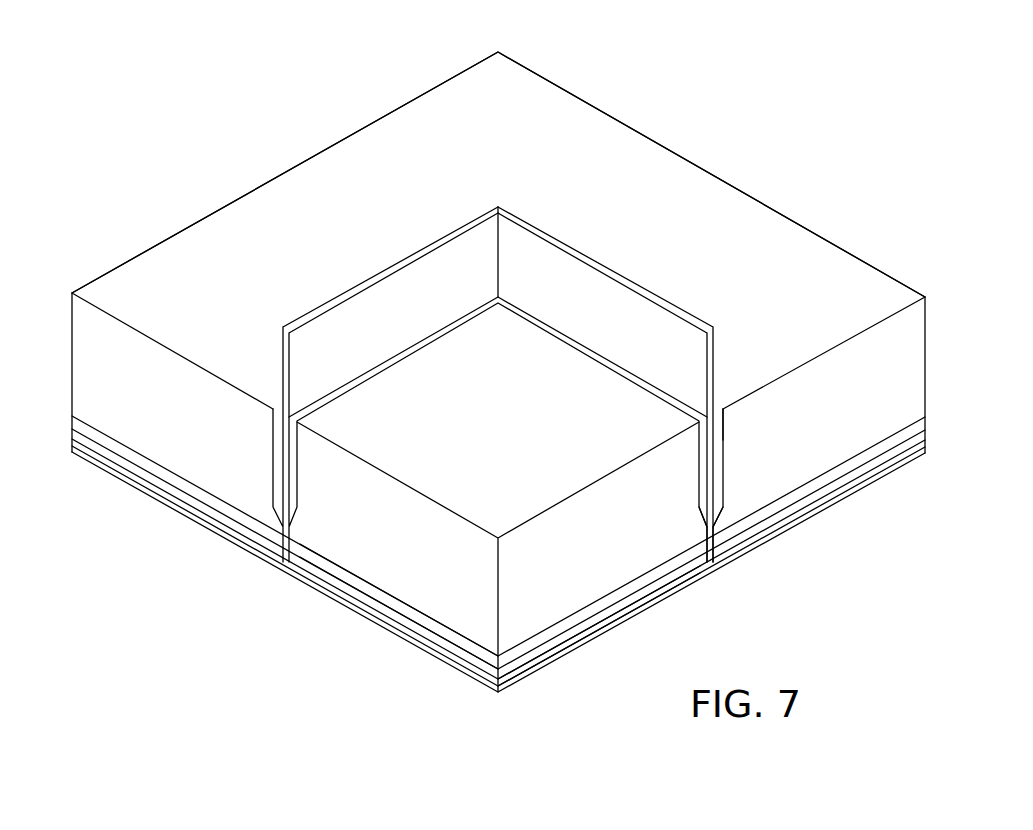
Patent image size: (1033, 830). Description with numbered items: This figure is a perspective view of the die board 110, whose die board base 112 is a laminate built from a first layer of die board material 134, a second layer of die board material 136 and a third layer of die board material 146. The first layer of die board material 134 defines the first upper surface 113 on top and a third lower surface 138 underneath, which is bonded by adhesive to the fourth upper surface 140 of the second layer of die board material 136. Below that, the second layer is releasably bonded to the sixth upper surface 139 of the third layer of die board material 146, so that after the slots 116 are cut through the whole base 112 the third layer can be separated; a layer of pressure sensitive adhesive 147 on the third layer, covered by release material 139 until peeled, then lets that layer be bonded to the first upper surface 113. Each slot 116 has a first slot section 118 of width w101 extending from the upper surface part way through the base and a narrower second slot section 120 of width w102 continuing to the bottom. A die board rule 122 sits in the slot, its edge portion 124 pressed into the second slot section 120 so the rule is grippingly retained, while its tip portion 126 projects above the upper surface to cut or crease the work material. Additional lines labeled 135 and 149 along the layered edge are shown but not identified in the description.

The die board 110 is at (699, 128).
The die board base 112 is at (189, 216).
The first upper surface 113 is at (322, 203).
The slots 116 is at (314, 463).
The first slot section 118 is at (725, 453).
The second slot section 120 is at (712, 560).
The die board rule 122 is at (518, 252).
The edge portion 124 is at (703, 537).
The tip portion 126 is at (393, 262).
The first layer of die board material 134 is at (103, 400).
The first layer front portion 135 is at (338, 577).
The second layer of die board material 136 is at (133, 457).
The third lower surface 138 is at (155, 461).
The sixth upper surface / release material 139 is at (377, 590).
The fourth upper surface 140 is at (200, 487).
The third layer of die board material 146 is at (170, 492).
The layer of pressure sensitive adhesive 147 is at (540, 664).
The third layer right portion 149 is at (575, 648).
The first slot width w101 is at (732, 417).
The second slot width w102 is at (724, 524).